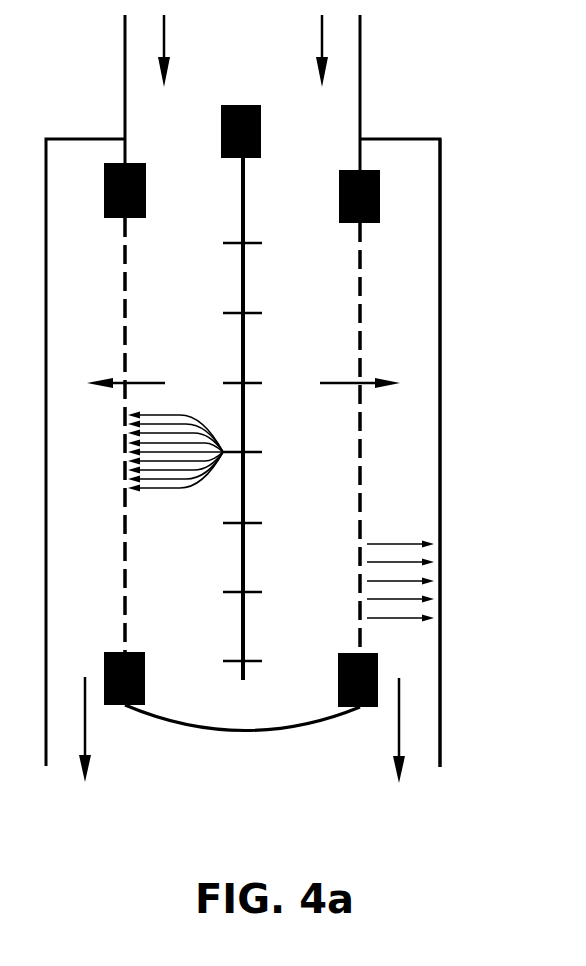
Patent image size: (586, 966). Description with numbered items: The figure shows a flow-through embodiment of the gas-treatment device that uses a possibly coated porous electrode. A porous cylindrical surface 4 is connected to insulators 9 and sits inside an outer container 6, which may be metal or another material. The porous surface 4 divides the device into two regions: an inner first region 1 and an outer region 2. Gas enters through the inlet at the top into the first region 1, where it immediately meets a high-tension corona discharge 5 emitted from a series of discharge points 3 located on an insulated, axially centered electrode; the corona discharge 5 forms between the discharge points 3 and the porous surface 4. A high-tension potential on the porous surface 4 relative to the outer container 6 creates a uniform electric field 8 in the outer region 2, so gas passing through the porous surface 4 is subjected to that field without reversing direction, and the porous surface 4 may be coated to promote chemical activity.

The first region 1 is at (316, 320).
The outer region 2 is at (412, 328).
The discharge points 3 is at (265, 657).
The porous cylindrical surface 4 is at (352, 553).
The corona discharge 5 is at (172, 493).
The outer container 6 is at (442, 500).
The uniform electric field 8 is at (398, 538).
The insulators 9 is at (337, 197).